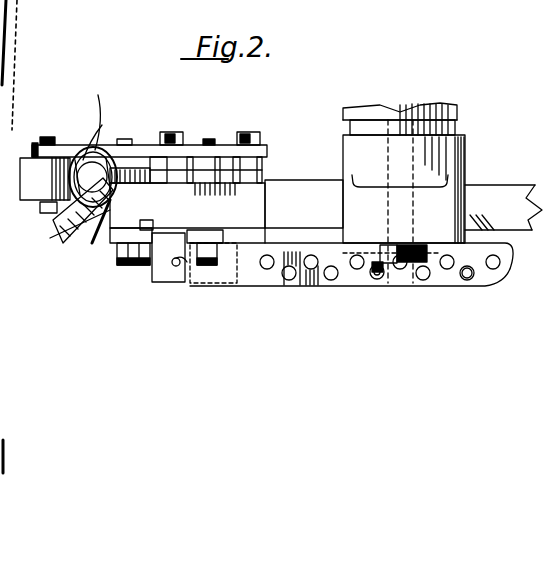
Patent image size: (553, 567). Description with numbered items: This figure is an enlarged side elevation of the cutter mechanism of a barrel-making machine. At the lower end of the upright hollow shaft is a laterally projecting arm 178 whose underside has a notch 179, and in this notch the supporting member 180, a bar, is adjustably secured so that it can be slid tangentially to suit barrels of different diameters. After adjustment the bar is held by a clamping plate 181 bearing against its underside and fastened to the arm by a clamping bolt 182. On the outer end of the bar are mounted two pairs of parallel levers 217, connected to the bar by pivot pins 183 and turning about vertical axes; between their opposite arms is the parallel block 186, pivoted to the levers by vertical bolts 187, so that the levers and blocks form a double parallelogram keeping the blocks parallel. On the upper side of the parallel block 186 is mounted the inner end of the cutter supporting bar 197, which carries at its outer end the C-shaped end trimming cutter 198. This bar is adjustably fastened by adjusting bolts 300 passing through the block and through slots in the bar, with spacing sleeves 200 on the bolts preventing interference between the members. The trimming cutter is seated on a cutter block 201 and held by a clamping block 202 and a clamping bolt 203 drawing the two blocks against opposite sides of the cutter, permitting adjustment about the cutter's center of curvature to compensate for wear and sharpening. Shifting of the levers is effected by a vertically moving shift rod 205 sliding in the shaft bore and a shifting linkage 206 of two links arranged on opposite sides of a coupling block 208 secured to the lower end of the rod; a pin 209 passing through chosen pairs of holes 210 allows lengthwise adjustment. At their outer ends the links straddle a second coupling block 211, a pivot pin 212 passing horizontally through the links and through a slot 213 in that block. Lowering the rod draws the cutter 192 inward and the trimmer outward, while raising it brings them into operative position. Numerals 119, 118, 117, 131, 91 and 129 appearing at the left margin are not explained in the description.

The laterally projecting arm 178 is at (404, 201).
The notch 179 is at (463, 188).
The supporting member 180 is at (304, 211).
The clamping plate 181 is at (360, 240).
The clamping bolt 182 is at (392, 268).
The pivot pins 183 is at (205, 140).
The parallel block 186 is at (187, 198).
The vertical bolts 187 is at (122, 268).
The cutter 192 is at (103, 130).
The cutter supporting bar 197 is at (73, 148).
The cutter or blade 198 is at (165, 132).
The spacing sleeves 200 is at (260, 162).
The cutter block 201 is at (45, 185).
The clamping block 202 is at (80, 238).
The clamping bolt 203 is at (74, 212).
The shift rod 205 is at (422, 104).
The shifting linkage 206 is at (268, 280).
The coupling block 208 is at (448, 288).
The pin 209 is at (380, 282).
The holes 210 is at (468, 278).
The coupling block 211 is at (155, 283).
The pivot pin 212 is at (208, 282).
The slot 213 is at (171, 254).
The parallel levers 217 is at (198, 178).
The adjusting bolts 300 is at (167, 132).
The adjacent figure element 119 is at (14, 237).
The adjacent figure element 118 is at (0, 268).
The adjacent figure element 117 is at (0, 306).
The adjacent figure element 131 is at (0, 362).
The adjacent figure element 91 is at (0, 389).
The adjacent figure element 129 is at (0, 420).